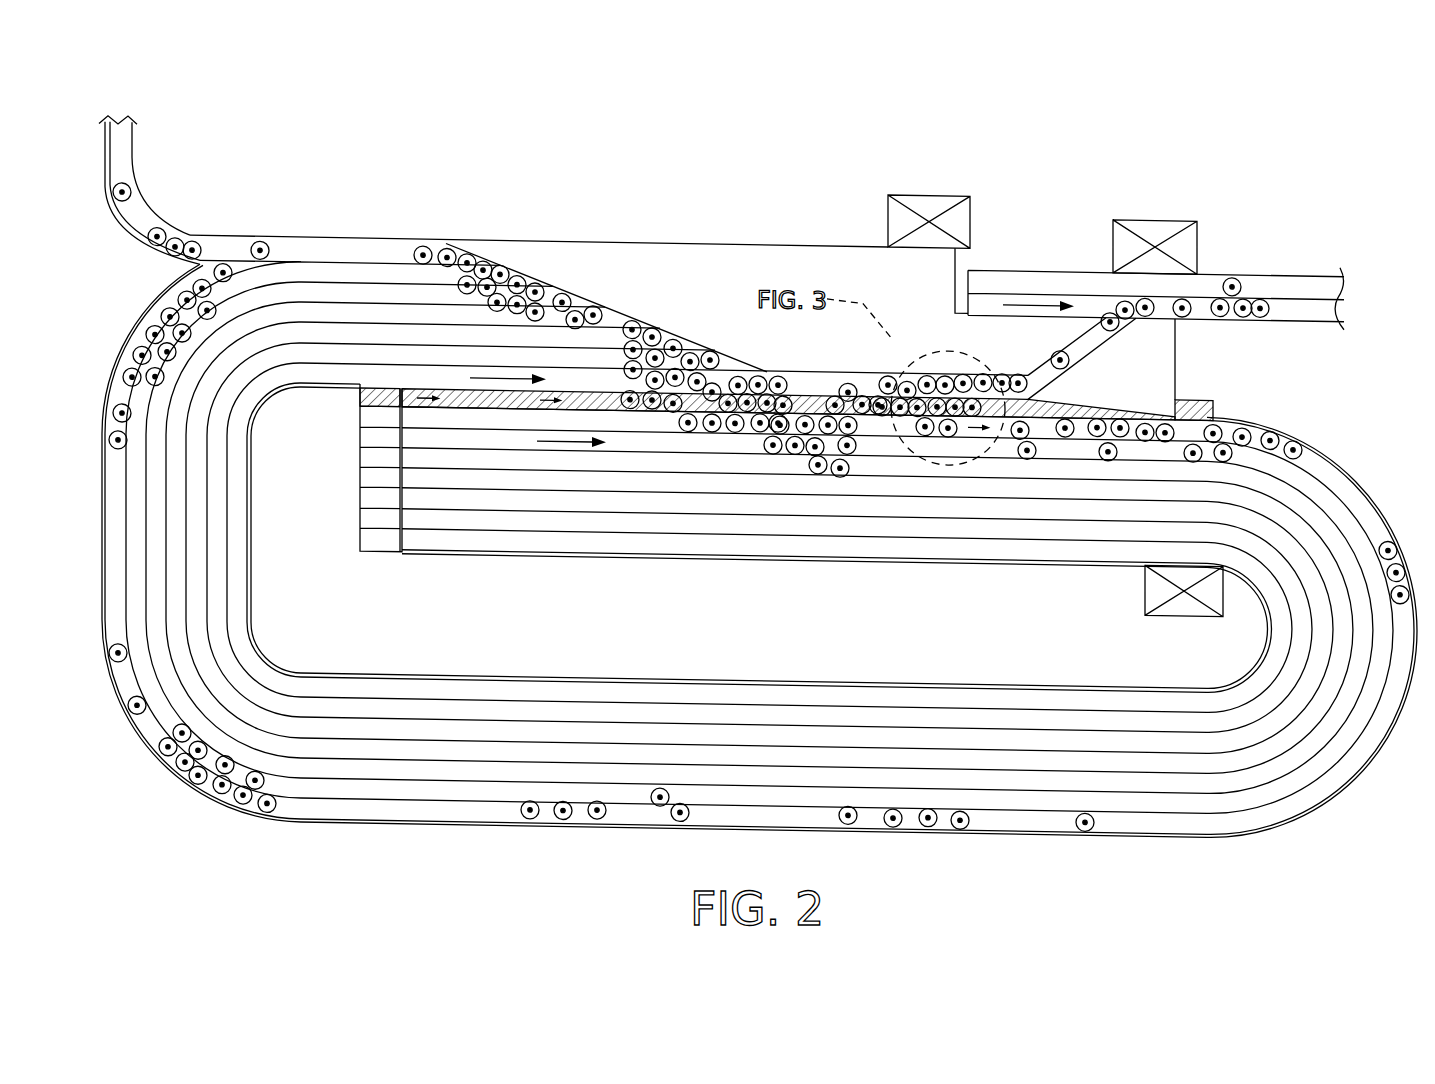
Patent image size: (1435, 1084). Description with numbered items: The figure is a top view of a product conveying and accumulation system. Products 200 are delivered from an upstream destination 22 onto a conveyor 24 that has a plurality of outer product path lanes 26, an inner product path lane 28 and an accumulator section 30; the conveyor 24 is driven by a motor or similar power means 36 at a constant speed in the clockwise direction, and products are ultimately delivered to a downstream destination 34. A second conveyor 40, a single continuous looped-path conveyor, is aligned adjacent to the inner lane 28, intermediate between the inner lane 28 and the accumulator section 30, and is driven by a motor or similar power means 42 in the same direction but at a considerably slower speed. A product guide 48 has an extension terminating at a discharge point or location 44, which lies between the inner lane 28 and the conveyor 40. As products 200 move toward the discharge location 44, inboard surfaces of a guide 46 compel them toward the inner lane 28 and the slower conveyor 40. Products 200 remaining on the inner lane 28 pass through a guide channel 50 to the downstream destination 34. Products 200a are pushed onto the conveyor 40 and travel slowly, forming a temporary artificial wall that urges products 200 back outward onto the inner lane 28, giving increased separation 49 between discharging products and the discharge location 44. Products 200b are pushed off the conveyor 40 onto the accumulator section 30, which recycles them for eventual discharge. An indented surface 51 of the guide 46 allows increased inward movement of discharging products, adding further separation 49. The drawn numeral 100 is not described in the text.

The upstream destination 22 is at (120, 148).
The articles 100 is at (181, 228).
The outer product path lanes 26 is at (331, 272).
The conveyor 24 is at (380, 296).
The inner product path lane 28 is at (607, 375).
The guide 46 is at (843, 254).
The motor or similar power means 36 is at (937, 194).
The guide channel 50 is at (1093, 314).
The downstream destination 34 is at (1315, 272).
The discharge point or location 44 is at (1012, 387).
The product guide 48 is at (1148, 344).
The second conveyor 40 is at (1215, 394).
The accumulator section 30 is at (1302, 511).
The motor or similar power means 42 is at (1144, 575).
The products 200 is at (893, 366).
The products 200a is at (905, 370).
The products 200b is at (919, 408).
The surface 51 is at (927, 364).
The separation 49 is at (948, 364).